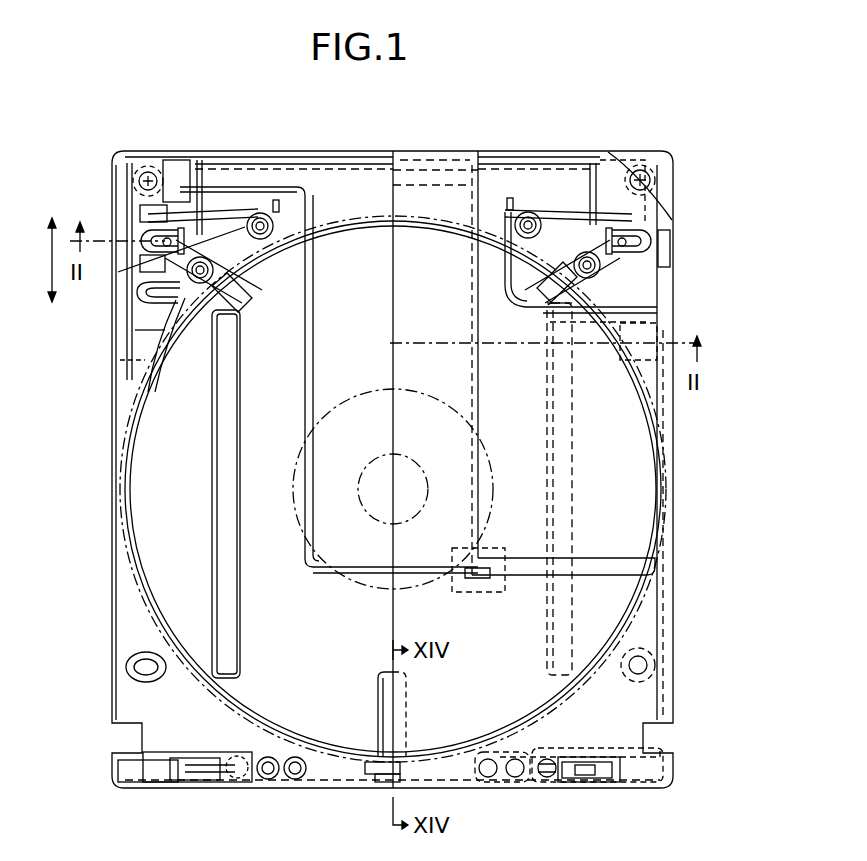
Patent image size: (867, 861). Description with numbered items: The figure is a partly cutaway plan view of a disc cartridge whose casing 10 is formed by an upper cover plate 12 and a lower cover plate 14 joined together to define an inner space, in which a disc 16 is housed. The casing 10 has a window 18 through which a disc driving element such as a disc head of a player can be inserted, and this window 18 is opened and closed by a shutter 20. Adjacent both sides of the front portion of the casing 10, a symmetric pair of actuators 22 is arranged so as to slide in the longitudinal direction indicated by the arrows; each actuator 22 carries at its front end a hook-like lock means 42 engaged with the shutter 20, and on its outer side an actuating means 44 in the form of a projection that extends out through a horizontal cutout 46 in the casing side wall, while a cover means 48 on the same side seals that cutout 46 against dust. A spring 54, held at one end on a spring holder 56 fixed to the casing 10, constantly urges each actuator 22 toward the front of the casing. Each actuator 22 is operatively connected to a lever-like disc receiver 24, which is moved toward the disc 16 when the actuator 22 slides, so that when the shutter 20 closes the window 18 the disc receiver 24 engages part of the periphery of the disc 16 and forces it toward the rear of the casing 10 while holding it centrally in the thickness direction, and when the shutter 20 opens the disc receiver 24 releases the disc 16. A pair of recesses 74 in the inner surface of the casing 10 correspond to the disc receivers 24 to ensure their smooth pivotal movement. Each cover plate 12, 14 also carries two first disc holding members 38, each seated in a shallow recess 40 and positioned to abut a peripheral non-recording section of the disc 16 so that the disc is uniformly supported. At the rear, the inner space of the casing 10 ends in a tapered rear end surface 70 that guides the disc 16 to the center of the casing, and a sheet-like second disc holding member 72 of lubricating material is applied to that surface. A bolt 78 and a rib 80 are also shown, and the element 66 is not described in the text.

The casing 10 is at (681, 150).
The upper cover plate 12 is at (660, 638).
The lower cover plate 14 is at (130, 700).
The disc 16 is at (120, 540).
The window 18 is at (437, 156).
The shutter 20 is at (465, 396).
The actuator 22 is at (140, 230).
The disc receiver 24 is at (248, 292).
The first disc holding member 38 is at (212, 468).
The shallow recess 40 is at (212, 510).
The lock means 42 is at (185, 160).
The actuating means 44 is at (150, 240).
The cutout 46 is at (125, 303).
The cover means 48 is at (132, 330).
The spring 54 is at (230, 205).
The spring holder 56 is at (530, 205).
The liner 66 is at (185, 290).
The rear end surface 70 is at (378, 775).
The second disc holding member 72 is at (378, 712).
The recess 74 is at (250, 302).
The bolt 78 is at (640, 168).
The rib 80 is at (163, 345).